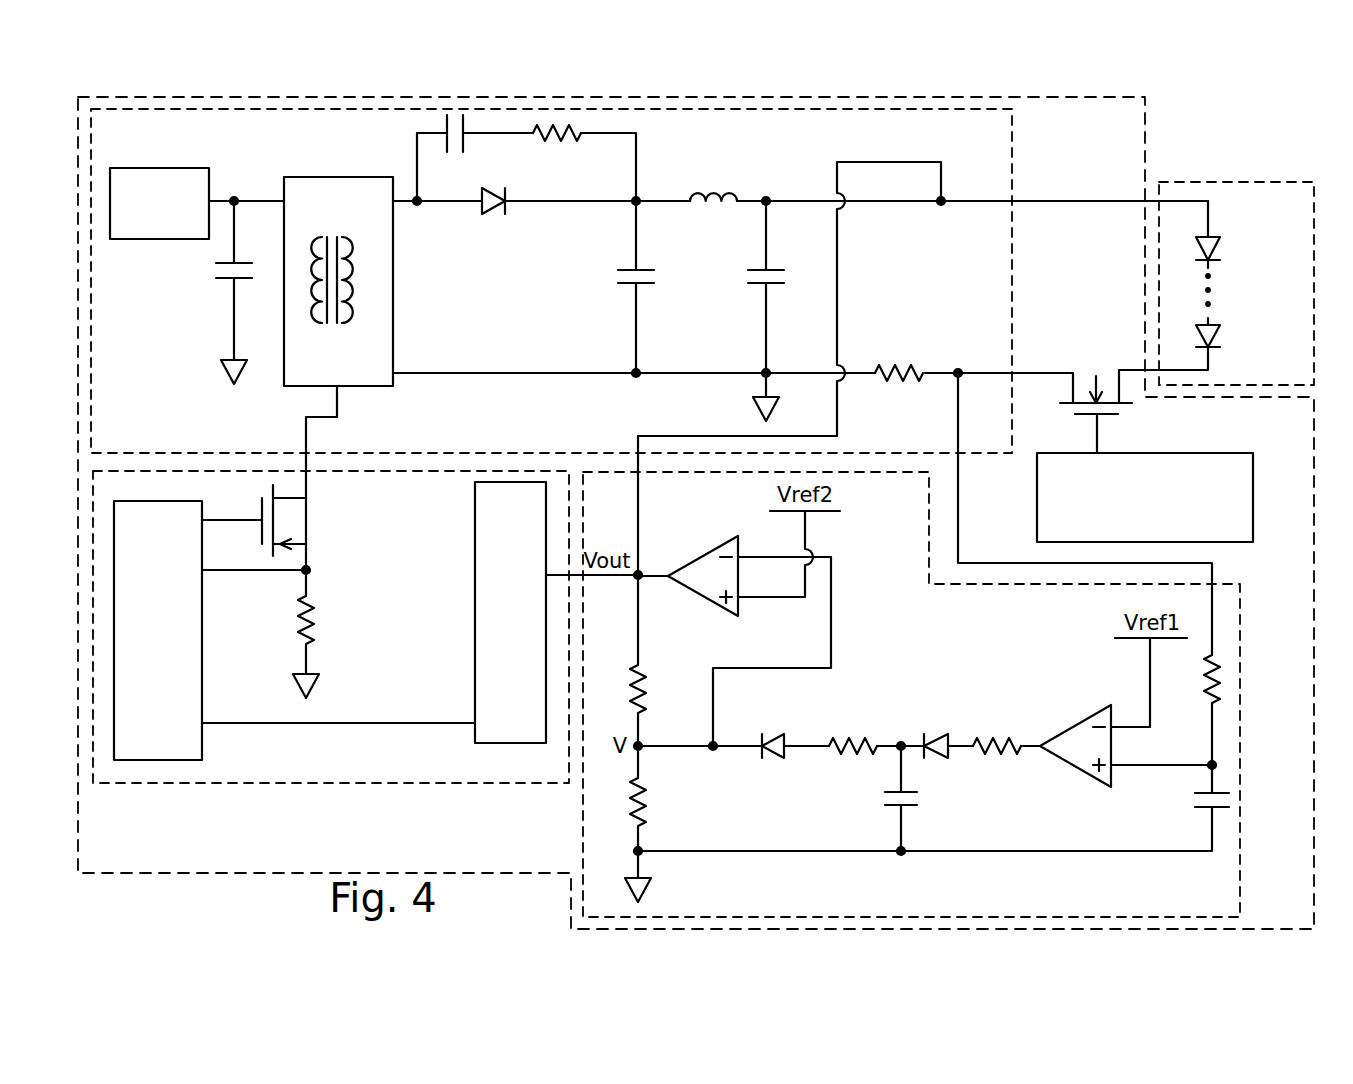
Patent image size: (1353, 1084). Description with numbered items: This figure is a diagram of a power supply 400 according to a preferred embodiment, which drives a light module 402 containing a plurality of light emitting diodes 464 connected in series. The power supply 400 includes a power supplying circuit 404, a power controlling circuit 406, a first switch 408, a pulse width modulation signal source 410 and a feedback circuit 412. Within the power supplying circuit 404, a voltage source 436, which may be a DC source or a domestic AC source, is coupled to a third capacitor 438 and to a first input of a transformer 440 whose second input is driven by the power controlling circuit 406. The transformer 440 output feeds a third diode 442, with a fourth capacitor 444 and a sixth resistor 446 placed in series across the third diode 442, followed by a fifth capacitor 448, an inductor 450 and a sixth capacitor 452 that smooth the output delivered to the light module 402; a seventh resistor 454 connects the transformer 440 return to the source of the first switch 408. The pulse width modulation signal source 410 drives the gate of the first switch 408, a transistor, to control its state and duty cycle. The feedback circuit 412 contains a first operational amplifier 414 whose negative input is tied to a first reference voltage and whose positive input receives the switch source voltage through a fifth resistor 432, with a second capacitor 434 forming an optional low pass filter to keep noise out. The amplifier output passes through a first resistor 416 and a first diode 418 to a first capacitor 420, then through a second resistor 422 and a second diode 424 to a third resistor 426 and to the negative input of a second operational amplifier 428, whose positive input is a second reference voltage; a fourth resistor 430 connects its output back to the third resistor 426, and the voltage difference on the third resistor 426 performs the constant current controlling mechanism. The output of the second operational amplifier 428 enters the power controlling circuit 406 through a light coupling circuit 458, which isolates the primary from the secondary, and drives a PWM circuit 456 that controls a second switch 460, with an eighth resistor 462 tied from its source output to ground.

The power supply 400 is at (1147, 100).
The light module 402 is at (1260, 182).
The power supplying circuit 404 is at (1012, 162).
The power controlling circuit 406 is at (418, 785).
The first switch 408 is at (1122, 406).
The pulse width modulation signal source 410 is at (1221, 452).
The feedback circuit 412 is at (1222, 584).
The first operational amplifier 414 is at (1075, 726).
The first resistor 416 is at (997, 753).
The first diode 418 is at (939, 734).
The first capacitor 420 is at (918, 798).
The second resistor 422 is at (848, 734).
The second diode 424 is at (774, 760).
The third resistor 426 is at (652, 800).
The second operational amplifier 428 is at (690, 552).
The fourth resistor 430 is at (650, 682).
The fifth resistor 432 is at (1225, 682).
The second capacitor 434 is at (1228, 807).
The voltage source 436 is at (173, 168).
The third capacitor 438 is at (219, 268).
The transformer 440 is at (301, 177).
The third diode 442 is at (496, 212).
The fourth capacitor 444 is at (454, 155).
The sixth resistor 446 is at (559, 141).
The fifth capacitor 448 is at (657, 278).
The inductor 450 is at (713, 192).
The sixth capacitor 452 is at (786, 278).
The seventh resistor 454 is at (910, 365).
The PWM circuit 456 is at (150, 762).
The light coupling circuit 458 is at (510, 745).
The second switch 460 is at (320, 526).
The eighth resistor 462 is at (320, 618).
The light emitting diodes 464 is at (1232, 223).